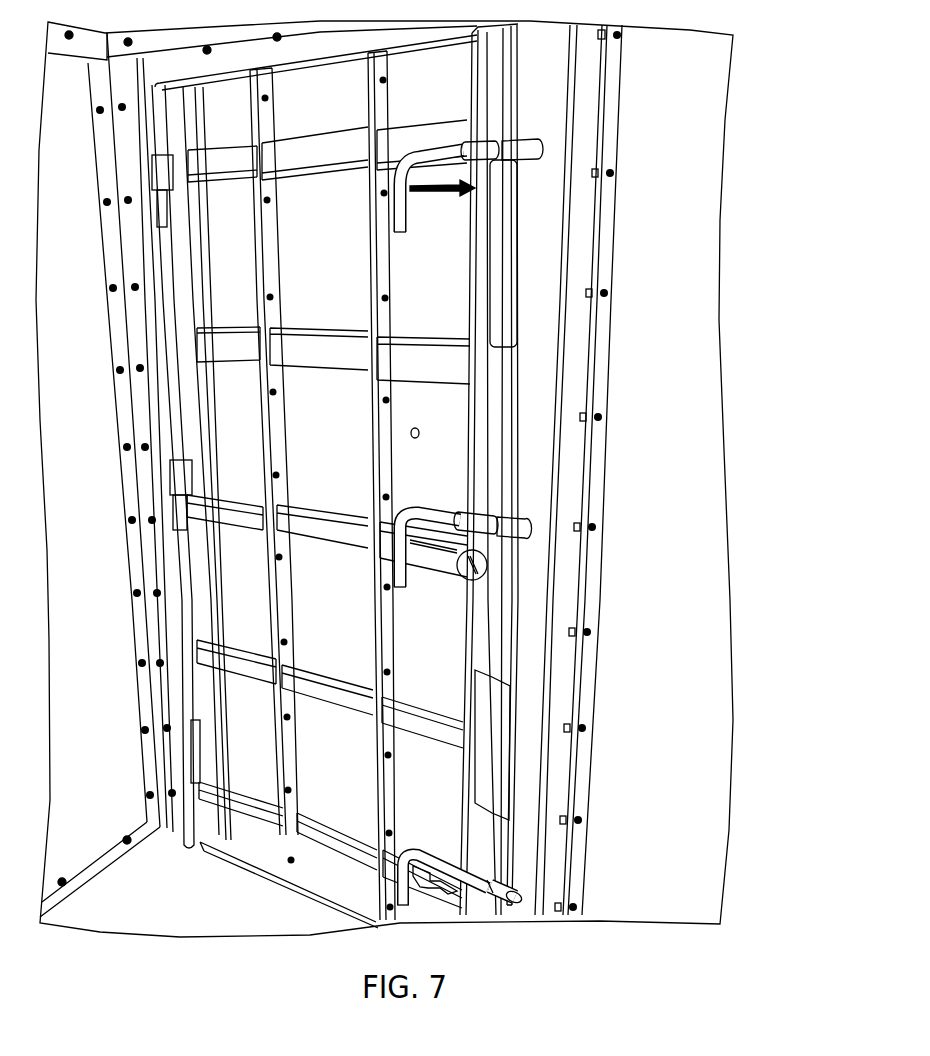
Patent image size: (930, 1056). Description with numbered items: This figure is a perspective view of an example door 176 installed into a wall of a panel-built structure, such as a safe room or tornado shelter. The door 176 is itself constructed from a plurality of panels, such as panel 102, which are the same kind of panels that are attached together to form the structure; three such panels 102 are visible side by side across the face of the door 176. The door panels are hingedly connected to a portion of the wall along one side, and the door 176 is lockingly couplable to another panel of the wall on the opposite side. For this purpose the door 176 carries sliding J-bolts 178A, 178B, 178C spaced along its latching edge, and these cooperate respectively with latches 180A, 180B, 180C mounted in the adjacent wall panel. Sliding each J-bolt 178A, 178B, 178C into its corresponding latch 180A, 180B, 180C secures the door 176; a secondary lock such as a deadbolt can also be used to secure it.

The panel 102 is at (240, 273).
The door 176 is at (522, 210).
The sliding J-bolt 178A is at (476, 160).
The sliding J-bolt 178B is at (477, 522).
The sliding J-bolt 178C is at (473, 880).
The latch 180A is at (528, 147).
The latch 180B is at (516, 518).
The latch 180C is at (505, 890).